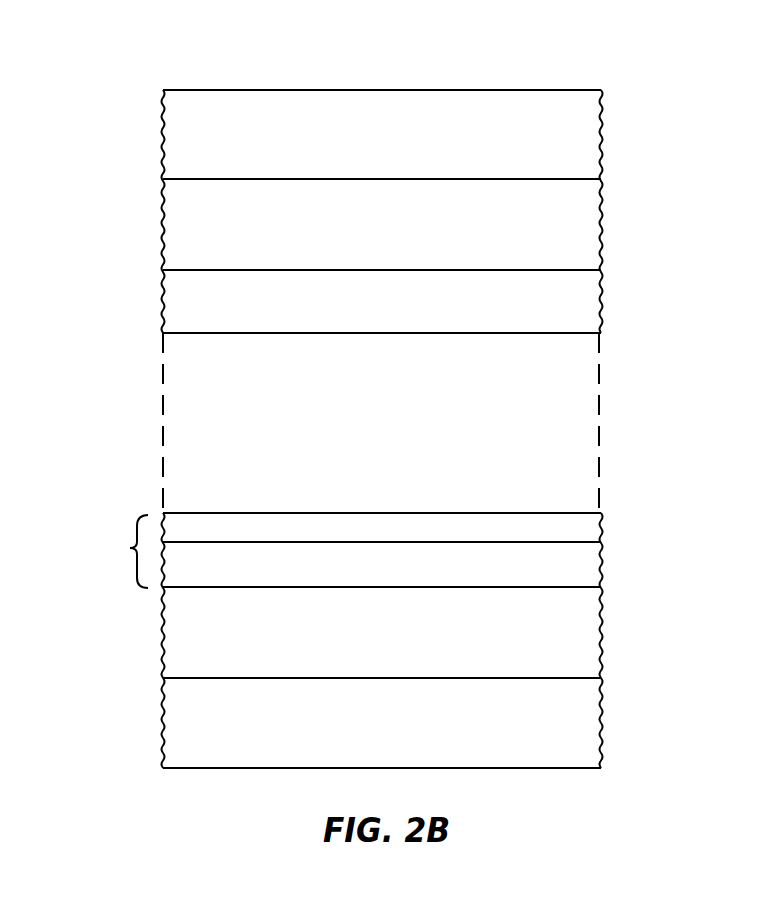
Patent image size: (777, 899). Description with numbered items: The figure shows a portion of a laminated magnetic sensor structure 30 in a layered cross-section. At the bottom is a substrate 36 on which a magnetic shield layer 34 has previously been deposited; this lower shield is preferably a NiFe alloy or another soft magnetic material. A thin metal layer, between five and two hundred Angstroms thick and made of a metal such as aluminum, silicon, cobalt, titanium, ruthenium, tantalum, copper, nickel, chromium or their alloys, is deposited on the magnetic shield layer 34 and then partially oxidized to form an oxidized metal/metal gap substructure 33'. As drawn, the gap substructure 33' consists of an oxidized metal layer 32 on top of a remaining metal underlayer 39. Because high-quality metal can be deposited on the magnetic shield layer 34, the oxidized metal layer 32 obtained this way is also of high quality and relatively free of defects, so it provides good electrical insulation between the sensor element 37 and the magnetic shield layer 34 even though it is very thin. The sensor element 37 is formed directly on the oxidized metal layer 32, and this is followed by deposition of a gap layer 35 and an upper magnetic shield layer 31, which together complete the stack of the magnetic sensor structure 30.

The magnetic sensor structure 30 is at (97, 93).
The magnetic shield layer 31 is at (602, 140).
The gap layer 35 is at (602, 237).
The sensor element 37 is at (602, 303).
The oxidized metal layer 32 is at (602, 532).
The metal underlayer 39 is at (602, 570).
The oxidized metal/metal gap substructure 33' is at (100, 551).
The magnetic shield layer 34 is at (602, 643).
The substrate 36 is at (602, 738).